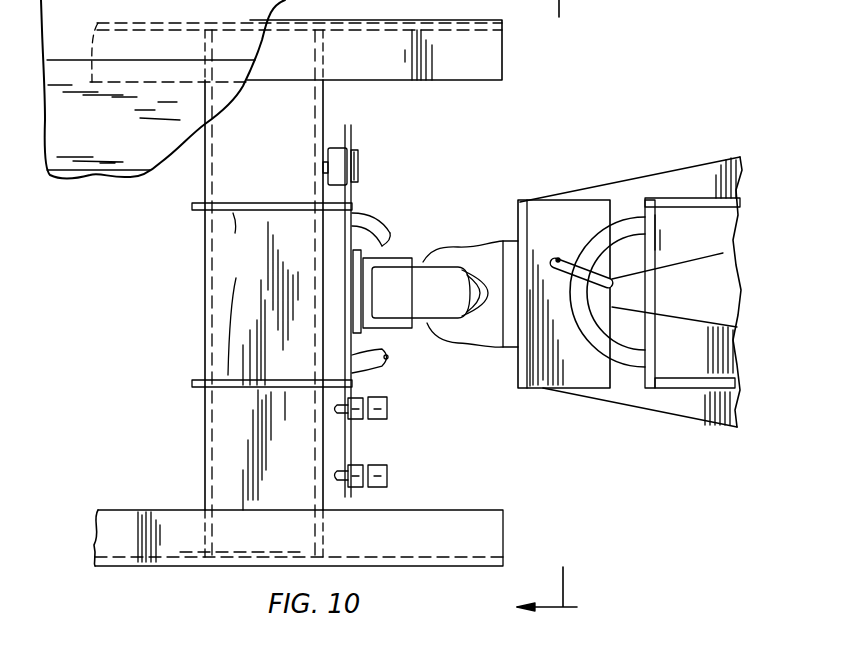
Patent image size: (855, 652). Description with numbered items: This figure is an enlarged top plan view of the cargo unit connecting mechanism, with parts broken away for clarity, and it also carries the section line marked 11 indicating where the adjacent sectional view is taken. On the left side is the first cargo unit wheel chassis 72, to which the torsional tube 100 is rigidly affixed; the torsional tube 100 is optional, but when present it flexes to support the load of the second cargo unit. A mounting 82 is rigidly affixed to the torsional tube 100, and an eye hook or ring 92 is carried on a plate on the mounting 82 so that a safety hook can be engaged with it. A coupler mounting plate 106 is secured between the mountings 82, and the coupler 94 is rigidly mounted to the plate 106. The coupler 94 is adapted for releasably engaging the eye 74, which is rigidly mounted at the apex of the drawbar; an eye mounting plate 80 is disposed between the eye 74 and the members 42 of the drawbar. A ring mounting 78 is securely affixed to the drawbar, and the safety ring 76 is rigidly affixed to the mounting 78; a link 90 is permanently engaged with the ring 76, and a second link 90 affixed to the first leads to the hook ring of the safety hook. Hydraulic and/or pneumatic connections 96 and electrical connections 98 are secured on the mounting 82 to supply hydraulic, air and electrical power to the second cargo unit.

The first cargo unit wheel chassis 72 is at (137, 63).
The torsional tube 100 is at (205, 408).
The mounting 82 is at (272, 311).
The electrical connections 98 is at (333, 153).
The eye hook or ring 92 is at (355, 217).
The coupler mounting plate 106 is at (347, 290).
The coupler 94 is at (420, 298).
The eye 74 is at (478, 254).
The eye mounting plate 80 is at (522, 200).
The link 90 is at (565, 258).
The safety ring 76 is at (605, 343).
The ring mounting 78 is at (683, 200).
The members of the drawbar 42 is at (629, 192).
The hydraulic and/or pneumatic connections 96 is at (335, 413).
The section line 11- 11 is at (567, 310).